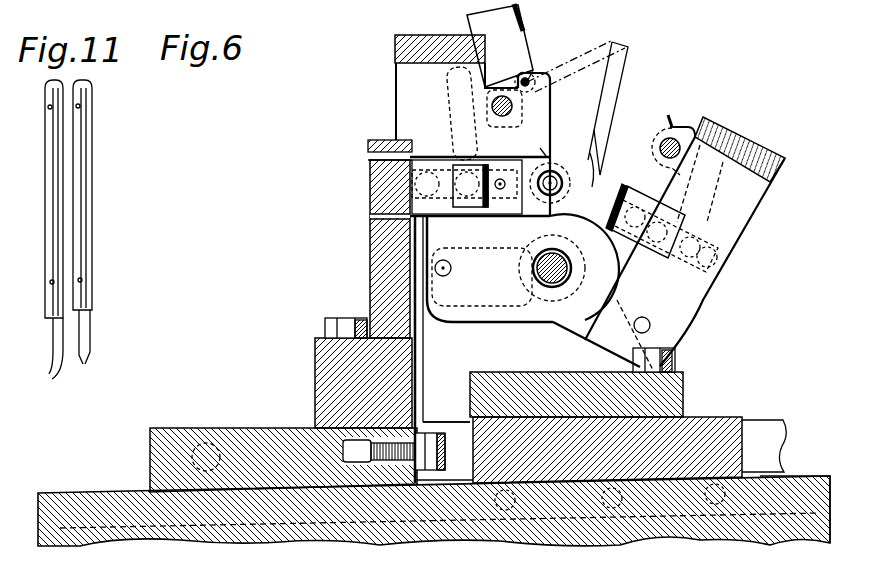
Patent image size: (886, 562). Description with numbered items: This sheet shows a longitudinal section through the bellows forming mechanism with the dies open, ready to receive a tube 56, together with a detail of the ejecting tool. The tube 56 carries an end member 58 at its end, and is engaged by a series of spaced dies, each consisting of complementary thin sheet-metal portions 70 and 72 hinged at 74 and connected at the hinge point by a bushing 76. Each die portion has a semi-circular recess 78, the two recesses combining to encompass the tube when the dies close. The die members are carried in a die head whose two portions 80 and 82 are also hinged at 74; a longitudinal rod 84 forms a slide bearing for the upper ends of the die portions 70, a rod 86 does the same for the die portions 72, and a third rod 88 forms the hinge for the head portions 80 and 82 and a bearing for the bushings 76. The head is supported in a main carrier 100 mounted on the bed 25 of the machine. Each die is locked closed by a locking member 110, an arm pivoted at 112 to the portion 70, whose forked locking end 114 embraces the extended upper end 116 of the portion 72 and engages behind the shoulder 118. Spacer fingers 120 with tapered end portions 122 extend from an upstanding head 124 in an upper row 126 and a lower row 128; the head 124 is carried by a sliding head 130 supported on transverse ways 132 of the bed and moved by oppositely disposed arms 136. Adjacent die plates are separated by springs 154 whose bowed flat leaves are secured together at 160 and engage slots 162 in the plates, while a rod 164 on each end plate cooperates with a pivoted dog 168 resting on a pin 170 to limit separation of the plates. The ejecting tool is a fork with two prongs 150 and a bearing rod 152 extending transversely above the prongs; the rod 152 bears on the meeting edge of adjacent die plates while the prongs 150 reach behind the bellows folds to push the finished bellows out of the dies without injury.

In FIG. 6, the bed 25 is at (58, 540).
In FIG. 6, the tube 56 is at (558, 178).
In FIG. 6, the end member 58 is at (562, 185).
In FIG. 6, the complementary die portion 70 is at (548, 72).
In FIG. 6, the complementary die portion 72 is at (676, 125).
In FIG. 6, the hinge 74 is at (487, 320).
In FIG. 6, the bushing 76 is at (533, 268).
In FIG. 6, the semi-circular recess 78 is at (589, 161).
In FIG. 6, the die head portion 80 is at (411, 35).
In FIG. 6, the die head portion 82 is at (743, 137).
In FIG. 6, the longitudinal rod 84 is at (492, 105).
In FIG. 6, the longitudinal rod 86 is at (674, 128).
In FIG. 6, the third rod 88 is at (540, 313).
In FIG. 6, the main carrier 100 is at (683, 372).
In FIG. 6, the locking member 110 is at (524, 18).
In FIG. 6, the pivot 112 is at (530, 48).
In FIG. 6, the forked locking end 114 is at (500, 13).
In FIG. 6, the extended upper end 116 is at (670, 113).
In FIG. 6, the shoulder 118 is at (685, 112).
In FIG. 6, the spacer finger 120 is at (430, 148).
In FIG. 6, the tapered end portion 122 is at (543, 150).
In FIG. 6, the upstanding head 124 is at (377, 278).
In FIG. 6, the upper row 126 is at (368, 150).
In FIG. 6, the lower row 128 is at (410, 216).
In FIG. 6, the sliding head 130 is at (253, 427).
In FIG. 6, the transverse ways 132 is at (800, 474).
In FIG. 6, the arm 136 is at (760, 423).
In FIG. 11, the prong 150 is at (88, 362).
In FIG. 6, the prong 150 is at (552, 92).
In FIG. 11, the bearing rod 152 is at (40, 344).
In FIG. 6, the bearing rod 152 is at (580, 128).
In FIG. 6, the spring 154 is at (415, 178).
In FIG. 6, the securing point 160 is at (448, 116).
In FIG. 6, the slot 162 is at (540, 240).
In FIG. 6, the rod 164 is at (495, 240).
In FIG. 6, the pivoted dog 168 is at (450, 115).
In FIG. 6, the pin 170 is at (470, 212).